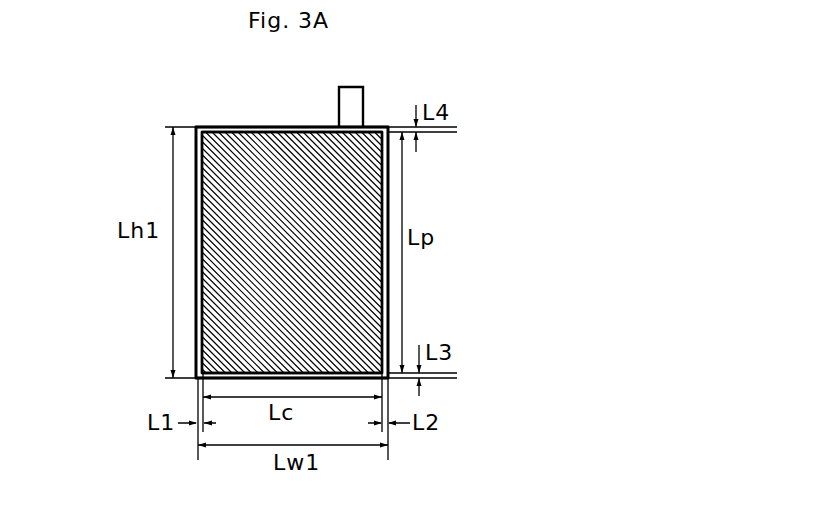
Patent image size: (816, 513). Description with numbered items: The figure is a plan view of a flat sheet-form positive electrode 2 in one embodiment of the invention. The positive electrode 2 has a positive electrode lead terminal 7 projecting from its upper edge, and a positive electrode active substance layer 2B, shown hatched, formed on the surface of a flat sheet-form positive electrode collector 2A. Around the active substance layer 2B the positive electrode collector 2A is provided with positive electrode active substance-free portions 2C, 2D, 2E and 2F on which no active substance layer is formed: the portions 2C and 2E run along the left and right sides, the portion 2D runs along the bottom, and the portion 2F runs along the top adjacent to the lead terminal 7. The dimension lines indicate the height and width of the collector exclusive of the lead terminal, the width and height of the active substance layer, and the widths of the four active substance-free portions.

The positive electrode 2 is at (134, 71).
The positive electrode collector 2A is at (194, 171).
The positive electrode active substance layer 2B is at (253, 138).
The positive electrode active substance-free portion 2C is at (197, 272).
The positive electrode active substance-free portion 2D is at (318, 378).
The positive electrode active substance-free portion 2E is at (389, 301).
The positive electrode active substance-free portion 2F is at (268, 128).
The positive electrode lead terminal 7 is at (363, 103).